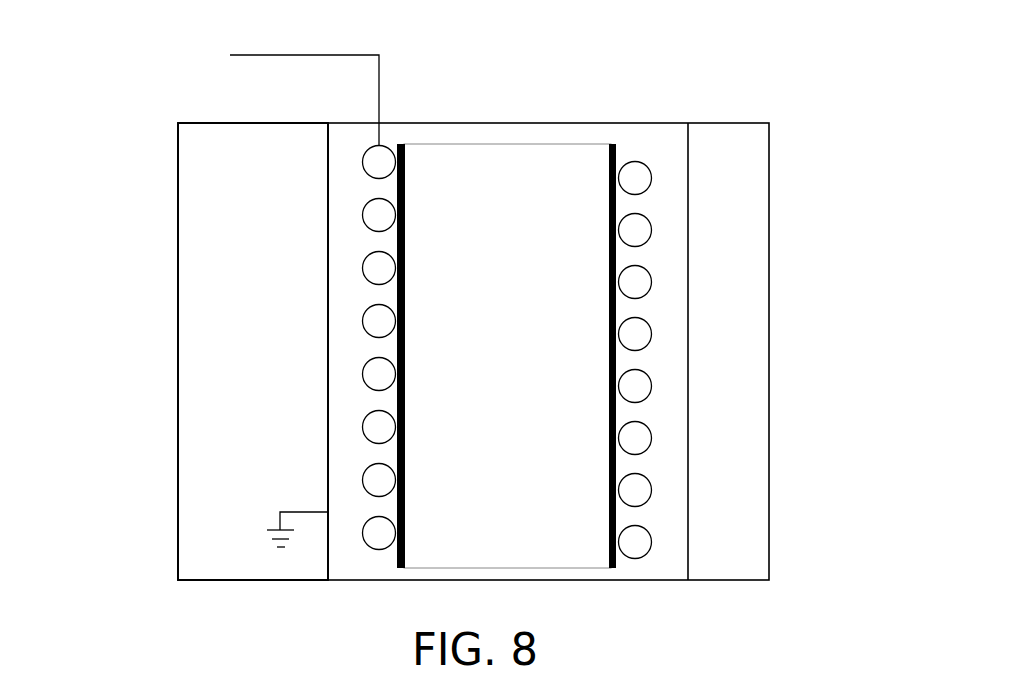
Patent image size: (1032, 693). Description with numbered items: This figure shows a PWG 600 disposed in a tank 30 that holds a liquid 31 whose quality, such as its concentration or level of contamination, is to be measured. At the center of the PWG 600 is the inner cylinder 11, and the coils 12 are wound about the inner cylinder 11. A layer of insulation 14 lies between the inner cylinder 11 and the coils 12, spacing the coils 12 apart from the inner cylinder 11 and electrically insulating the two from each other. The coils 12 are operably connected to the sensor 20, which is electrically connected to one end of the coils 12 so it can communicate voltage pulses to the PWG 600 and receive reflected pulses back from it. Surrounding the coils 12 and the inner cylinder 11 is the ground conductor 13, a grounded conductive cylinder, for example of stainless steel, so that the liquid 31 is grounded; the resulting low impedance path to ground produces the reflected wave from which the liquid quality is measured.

The tank 30 is at (772, 296).
The PWG 600 is at (280, 262).
The liquid 31 is at (241, 492).
The ground conductor 13 is at (325, 410).
The sensor 20 is at (262, 75).
The inner cylinder 11 is at (518, 271).
The insulation 14 is at (620, 188).
The coils 12 is at (655, 242).